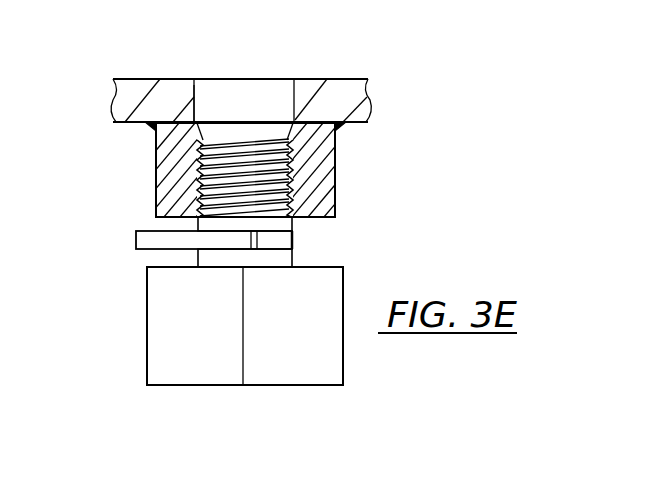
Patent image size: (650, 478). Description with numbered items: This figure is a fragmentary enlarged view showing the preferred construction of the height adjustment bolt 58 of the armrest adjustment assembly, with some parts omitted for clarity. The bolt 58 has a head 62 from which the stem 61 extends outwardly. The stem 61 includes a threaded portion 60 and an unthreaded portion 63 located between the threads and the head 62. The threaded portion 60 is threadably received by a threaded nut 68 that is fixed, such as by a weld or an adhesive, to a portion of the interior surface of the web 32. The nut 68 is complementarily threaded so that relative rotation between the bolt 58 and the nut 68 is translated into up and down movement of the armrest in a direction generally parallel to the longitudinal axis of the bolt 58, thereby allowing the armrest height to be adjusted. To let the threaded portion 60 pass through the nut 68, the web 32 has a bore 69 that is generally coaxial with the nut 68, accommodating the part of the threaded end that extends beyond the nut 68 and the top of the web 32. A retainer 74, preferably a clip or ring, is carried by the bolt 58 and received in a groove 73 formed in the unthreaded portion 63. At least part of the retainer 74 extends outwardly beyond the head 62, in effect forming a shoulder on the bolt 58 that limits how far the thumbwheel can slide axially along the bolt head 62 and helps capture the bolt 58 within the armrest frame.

The web 32 is at (356, 78).
The bore 69 is at (200, 93).
The threaded nut 68 is at (156, 180).
The stem 61 is at (251, 140).
The threaded portion 60 is at (300, 183).
The unthreaded portion 63 is at (198, 225).
The retainer 74 is at (136, 241).
The groove 73 is at (292, 238).
The head 62 is at (305, 385).
The height adjustment bolt 58 is at (126, 370).